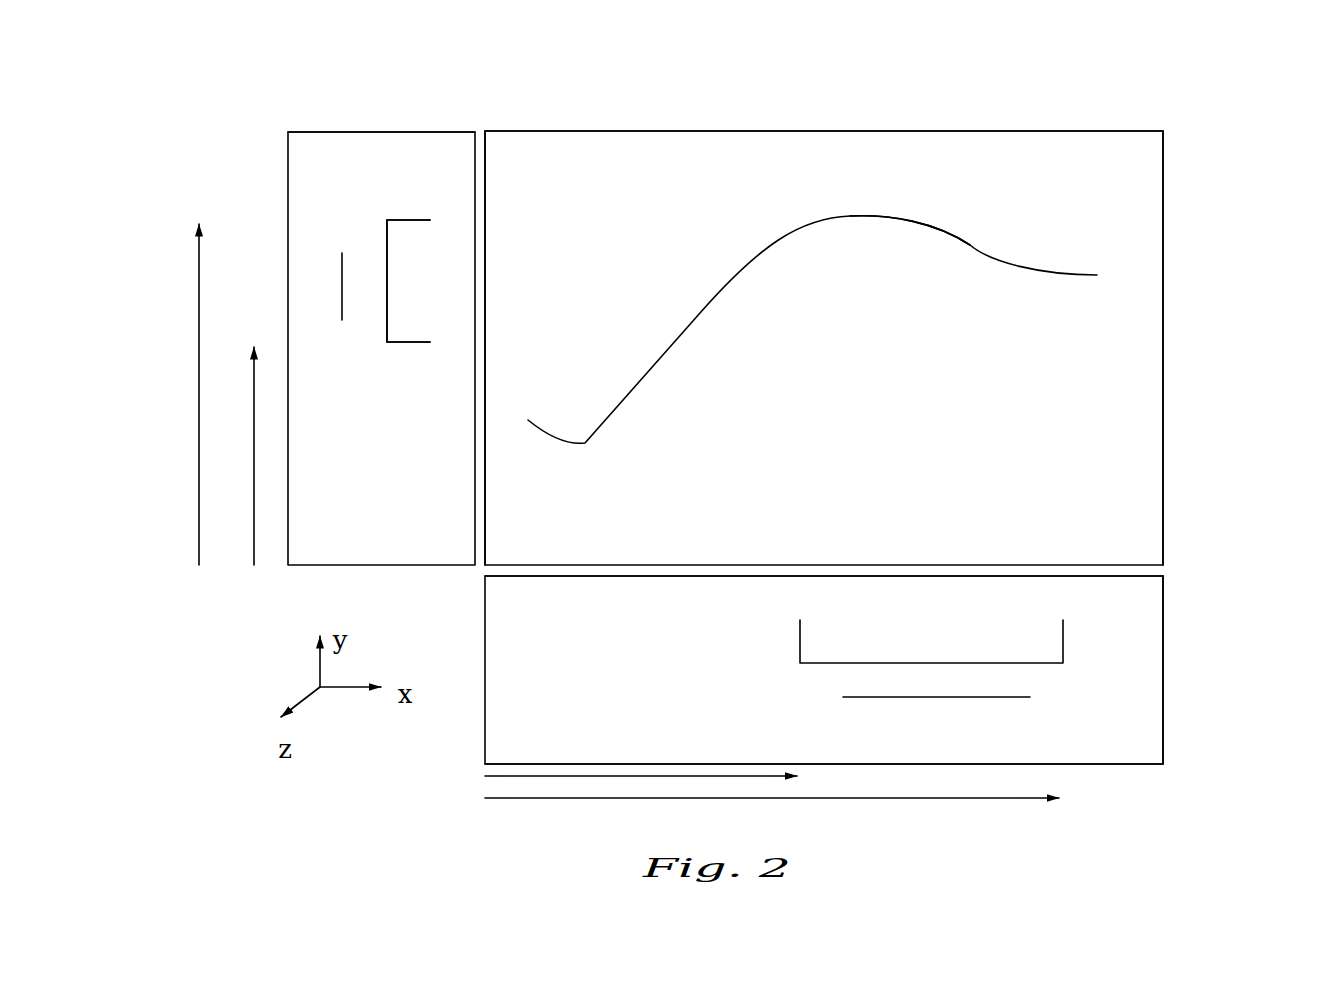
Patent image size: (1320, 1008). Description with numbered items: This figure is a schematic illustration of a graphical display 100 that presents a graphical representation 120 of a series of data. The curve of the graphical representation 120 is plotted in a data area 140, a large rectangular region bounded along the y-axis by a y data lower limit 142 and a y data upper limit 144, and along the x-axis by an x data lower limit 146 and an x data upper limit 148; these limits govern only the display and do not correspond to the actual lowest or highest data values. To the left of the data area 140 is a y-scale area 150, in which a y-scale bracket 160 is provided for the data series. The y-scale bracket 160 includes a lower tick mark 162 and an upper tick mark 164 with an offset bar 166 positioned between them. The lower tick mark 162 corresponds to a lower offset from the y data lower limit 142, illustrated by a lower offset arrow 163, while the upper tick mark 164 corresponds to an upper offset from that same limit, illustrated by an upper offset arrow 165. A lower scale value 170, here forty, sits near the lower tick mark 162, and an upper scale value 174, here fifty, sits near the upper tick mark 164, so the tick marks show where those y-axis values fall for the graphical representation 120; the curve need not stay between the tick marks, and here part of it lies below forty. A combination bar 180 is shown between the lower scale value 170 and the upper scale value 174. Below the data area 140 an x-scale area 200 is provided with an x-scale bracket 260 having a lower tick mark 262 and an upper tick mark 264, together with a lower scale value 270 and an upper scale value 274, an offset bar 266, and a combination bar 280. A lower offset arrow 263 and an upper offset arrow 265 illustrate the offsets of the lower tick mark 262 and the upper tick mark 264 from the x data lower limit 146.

The graphical display 100 is at (804, 93).
The graphical representation 120 is at (1012, 249).
The data area 140 is at (857, 448).
The y data lower limit 142 is at (1178, 565).
The y data upper limit 144 is at (1178, 130).
The x data lower limit 146 is at (498, 116).
The x data upper limit 148 is at (1163, 106).
The y-scale area 150 is at (387, 116).
The y-scale bracket 160 is at (435, 285).
The lower tick mark 162 is at (406, 357).
The lower offset arrow 163 is at (255, 543).
The upper tick mark 164 is at (393, 204).
The upper offset arrow 165 is at (199, 531).
The offset bar 166 is at (373, 297).
The lower scale value 170 is at (343, 368).
The upper scale value 174 is at (330, 220).
The combination bar 180 is at (329, 263).
The x-scale area 200 is at (752, 584).
The x-scale bracket 260 is at (968, 594).
The lower tick mark 262 is at (786, 644).
The lower offset arrow 263 is at (507, 775).
The upper tick mark 264 is at (1080, 628).
The upper offset arrow 265 is at (515, 798).
The offset bar 266 is at (920, 660).
The lower scale value 270 is at (805, 735).
The upper scale value 274 is at (1077, 681).
The combination bar 280 is at (921, 714).